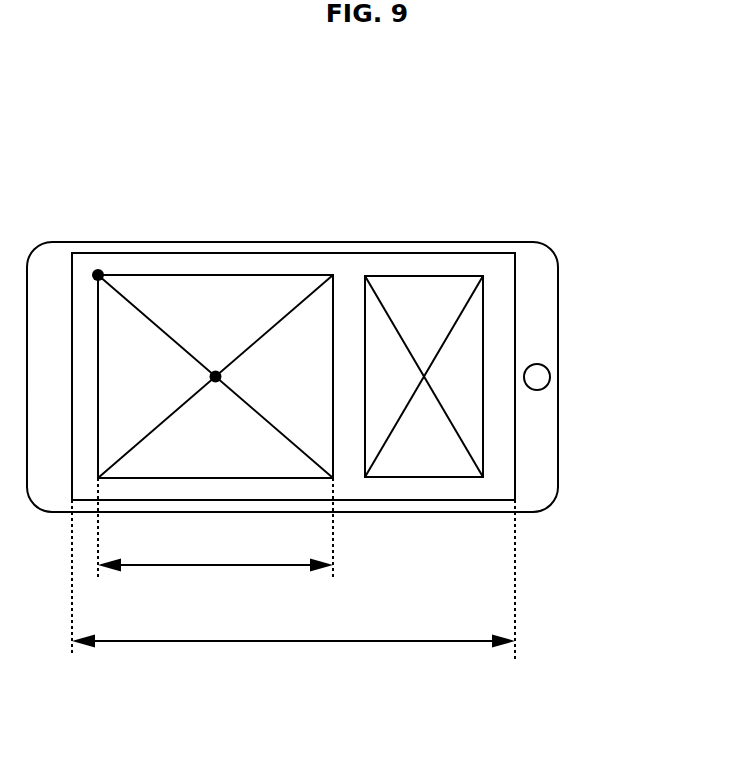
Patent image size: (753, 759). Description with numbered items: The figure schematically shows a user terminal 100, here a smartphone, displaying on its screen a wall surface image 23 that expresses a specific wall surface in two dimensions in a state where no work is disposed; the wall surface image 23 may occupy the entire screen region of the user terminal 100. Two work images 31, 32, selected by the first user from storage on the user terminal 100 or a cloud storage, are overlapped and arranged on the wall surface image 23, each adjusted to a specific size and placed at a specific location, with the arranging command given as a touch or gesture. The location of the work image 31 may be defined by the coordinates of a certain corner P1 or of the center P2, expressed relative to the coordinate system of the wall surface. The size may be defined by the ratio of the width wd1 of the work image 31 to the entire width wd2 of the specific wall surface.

The user terminal 100 is at (560, 375).
The wall surface image 23 is at (497, 253).
The work image 31 is at (290, 276).
The work image 32 is at (443, 277).
The corner P1 is at (98, 275).
The center P2 is at (215, 376).
The width of the work image wd1 is at (215, 539).
The entire width of the specific wall surface wd2 is at (293, 588).